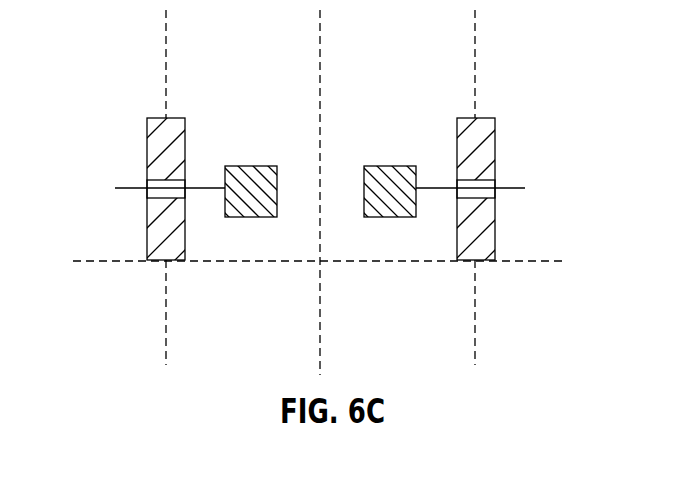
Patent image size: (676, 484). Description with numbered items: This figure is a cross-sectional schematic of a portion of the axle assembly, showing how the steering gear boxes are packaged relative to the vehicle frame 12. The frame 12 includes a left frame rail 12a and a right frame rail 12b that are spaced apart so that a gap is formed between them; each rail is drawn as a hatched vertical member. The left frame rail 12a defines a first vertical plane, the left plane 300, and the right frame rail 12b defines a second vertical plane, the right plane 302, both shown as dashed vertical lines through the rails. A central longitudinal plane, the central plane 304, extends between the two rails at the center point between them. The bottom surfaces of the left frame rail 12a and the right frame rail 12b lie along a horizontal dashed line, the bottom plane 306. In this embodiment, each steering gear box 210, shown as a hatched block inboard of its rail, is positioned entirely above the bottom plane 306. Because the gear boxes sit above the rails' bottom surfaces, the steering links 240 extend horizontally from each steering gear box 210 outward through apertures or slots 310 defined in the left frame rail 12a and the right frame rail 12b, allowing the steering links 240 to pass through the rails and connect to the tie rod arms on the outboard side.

The frame 12 is at (322, 178).
The left frame rail 12a is at (157, 127).
The right frame rail 12b is at (492, 127).
The steering gear box 210 is at (242, 166).
The steering link 240 is at (505, 189).
The left plane 300 is at (166, 35).
The right plane 302 is at (475, 35).
The central plane 304 is at (320, 68).
The bottom plane 306 is at (557, 261).
The slot 310 is at (158, 179).